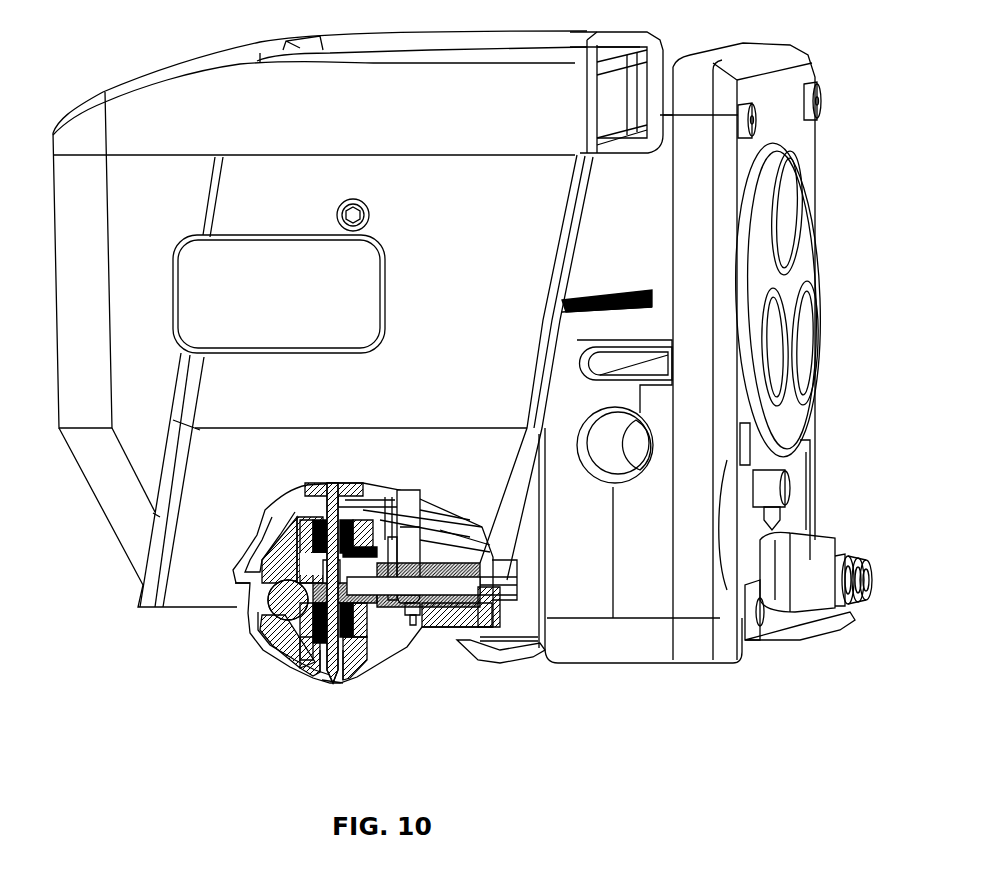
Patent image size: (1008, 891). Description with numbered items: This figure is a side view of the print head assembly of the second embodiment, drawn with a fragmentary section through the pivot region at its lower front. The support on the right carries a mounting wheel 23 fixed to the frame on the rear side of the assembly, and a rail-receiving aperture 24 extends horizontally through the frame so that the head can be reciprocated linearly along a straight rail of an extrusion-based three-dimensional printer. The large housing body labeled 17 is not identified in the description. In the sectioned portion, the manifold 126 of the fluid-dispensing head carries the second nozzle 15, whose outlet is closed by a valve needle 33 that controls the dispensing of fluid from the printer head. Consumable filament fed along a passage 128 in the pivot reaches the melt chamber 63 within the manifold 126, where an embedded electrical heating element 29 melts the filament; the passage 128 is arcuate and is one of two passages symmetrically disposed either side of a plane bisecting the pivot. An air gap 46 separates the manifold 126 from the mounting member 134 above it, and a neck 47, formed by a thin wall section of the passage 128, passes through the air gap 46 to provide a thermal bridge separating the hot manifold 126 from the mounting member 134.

The second nozzle 15 is at (318, 694).
The hood 17 is at (147, 78).
The mounting wheel 23 is at (810, 252).
The rail-receiving aperture 24 is at (632, 437).
The embedded electrical heating element 29 is at (256, 615).
The valve needle 33 is at (339, 484).
The air gap 46 is at (392, 546).
The neck 47 is at (413, 613).
The melt chamber 63 is at (280, 572).
The manifold 126 is at (256, 566).
The passage 128 is at (450, 580).
The mounting member 134 is at (438, 630).